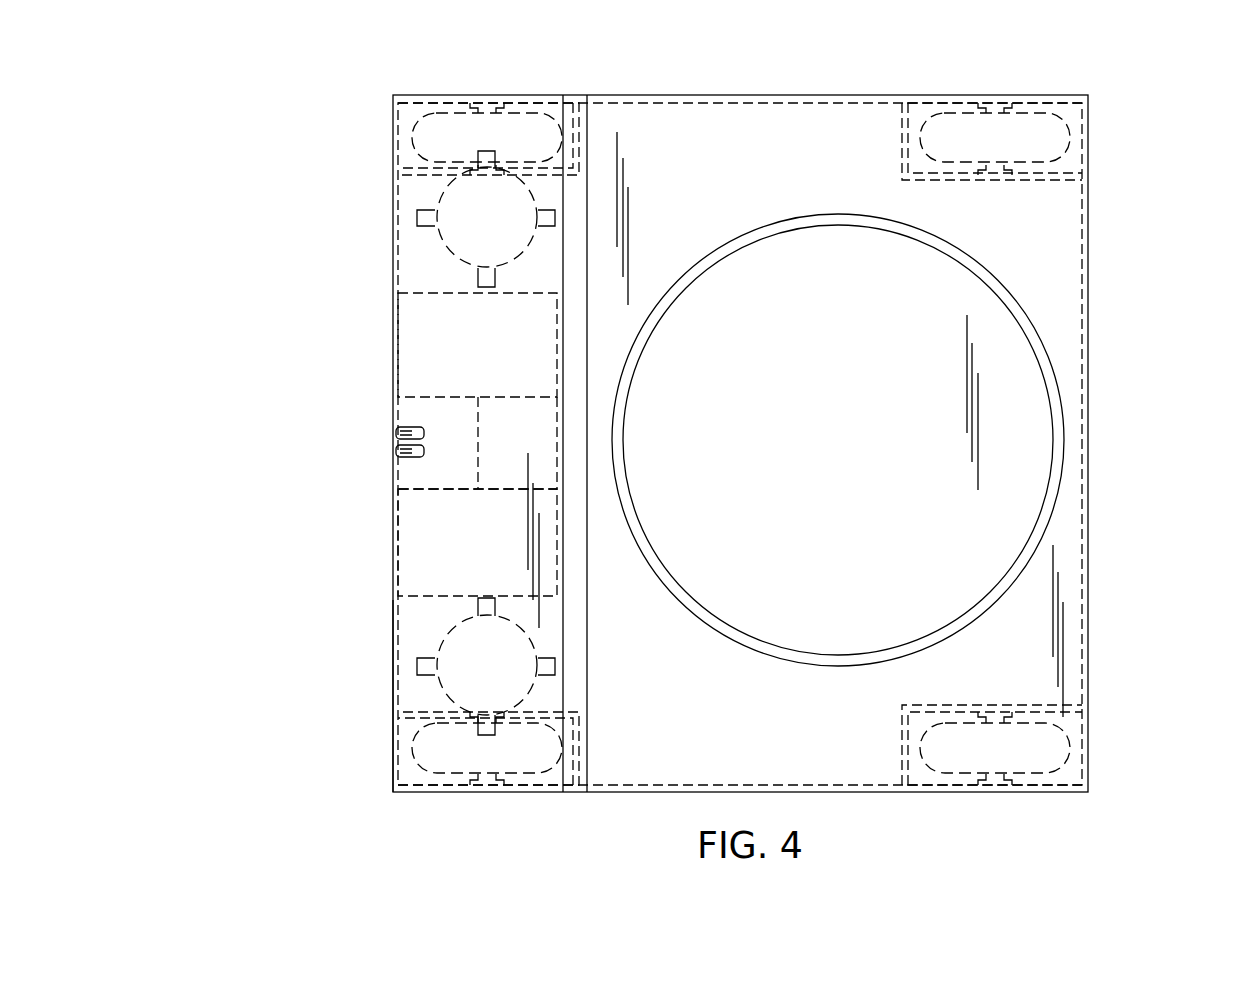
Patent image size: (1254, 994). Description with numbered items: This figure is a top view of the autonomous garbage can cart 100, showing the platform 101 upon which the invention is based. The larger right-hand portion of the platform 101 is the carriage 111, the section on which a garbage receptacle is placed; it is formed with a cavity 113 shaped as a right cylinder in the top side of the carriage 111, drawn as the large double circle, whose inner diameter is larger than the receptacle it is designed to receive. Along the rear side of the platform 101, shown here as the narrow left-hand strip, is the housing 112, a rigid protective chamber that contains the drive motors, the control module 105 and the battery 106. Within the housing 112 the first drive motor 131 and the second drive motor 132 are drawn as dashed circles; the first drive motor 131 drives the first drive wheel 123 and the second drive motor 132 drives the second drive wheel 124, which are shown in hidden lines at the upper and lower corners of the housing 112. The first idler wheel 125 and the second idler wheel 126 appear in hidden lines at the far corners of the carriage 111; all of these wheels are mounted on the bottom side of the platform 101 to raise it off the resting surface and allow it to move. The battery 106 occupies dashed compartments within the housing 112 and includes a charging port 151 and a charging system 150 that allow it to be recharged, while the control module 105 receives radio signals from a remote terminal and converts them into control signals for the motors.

The autonomous garbage can cart 100 is at (267, 151).
The platform 101 is at (802, 93).
The control module 105 is at (521, 442).
The battery 106 is at (423, 347).
The carriage 111 is at (1067, 610).
The housing 112 is at (395, 683).
The cavity 113 is at (985, 433).
The first drive wheel 123 is at (528, 133).
The second drive wheel 124 is at (521, 765).
The first idler wheel 125 is at (953, 140).
The second idler wheel 126 is at (1043, 745).
The first drive motor 131 is at (523, 193).
The second drive motor 132 is at (502, 655).
The charging system 150 is at (430, 472).
The charging port 151 is at (398, 440).